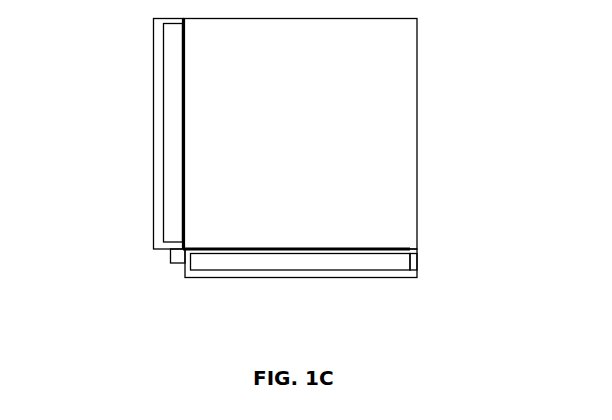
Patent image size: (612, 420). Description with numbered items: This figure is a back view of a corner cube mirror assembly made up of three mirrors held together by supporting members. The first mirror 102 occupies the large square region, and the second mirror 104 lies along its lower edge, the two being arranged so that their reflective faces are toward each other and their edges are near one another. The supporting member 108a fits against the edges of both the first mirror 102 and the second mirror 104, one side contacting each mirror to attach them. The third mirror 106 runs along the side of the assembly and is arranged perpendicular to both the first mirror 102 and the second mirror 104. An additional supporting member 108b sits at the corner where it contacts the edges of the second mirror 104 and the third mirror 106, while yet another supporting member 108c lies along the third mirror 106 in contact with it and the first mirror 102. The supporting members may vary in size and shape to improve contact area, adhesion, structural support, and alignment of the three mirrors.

The first mirror 102 is at (417, 93).
The second mirror 104 is at (372, 278).
The third mirror 106 is at (153, 75).
The supporting member 108a is at (410, 262).
The supporting member 108b is at (172, 260).
The supporting member 108c is at (164, 126).